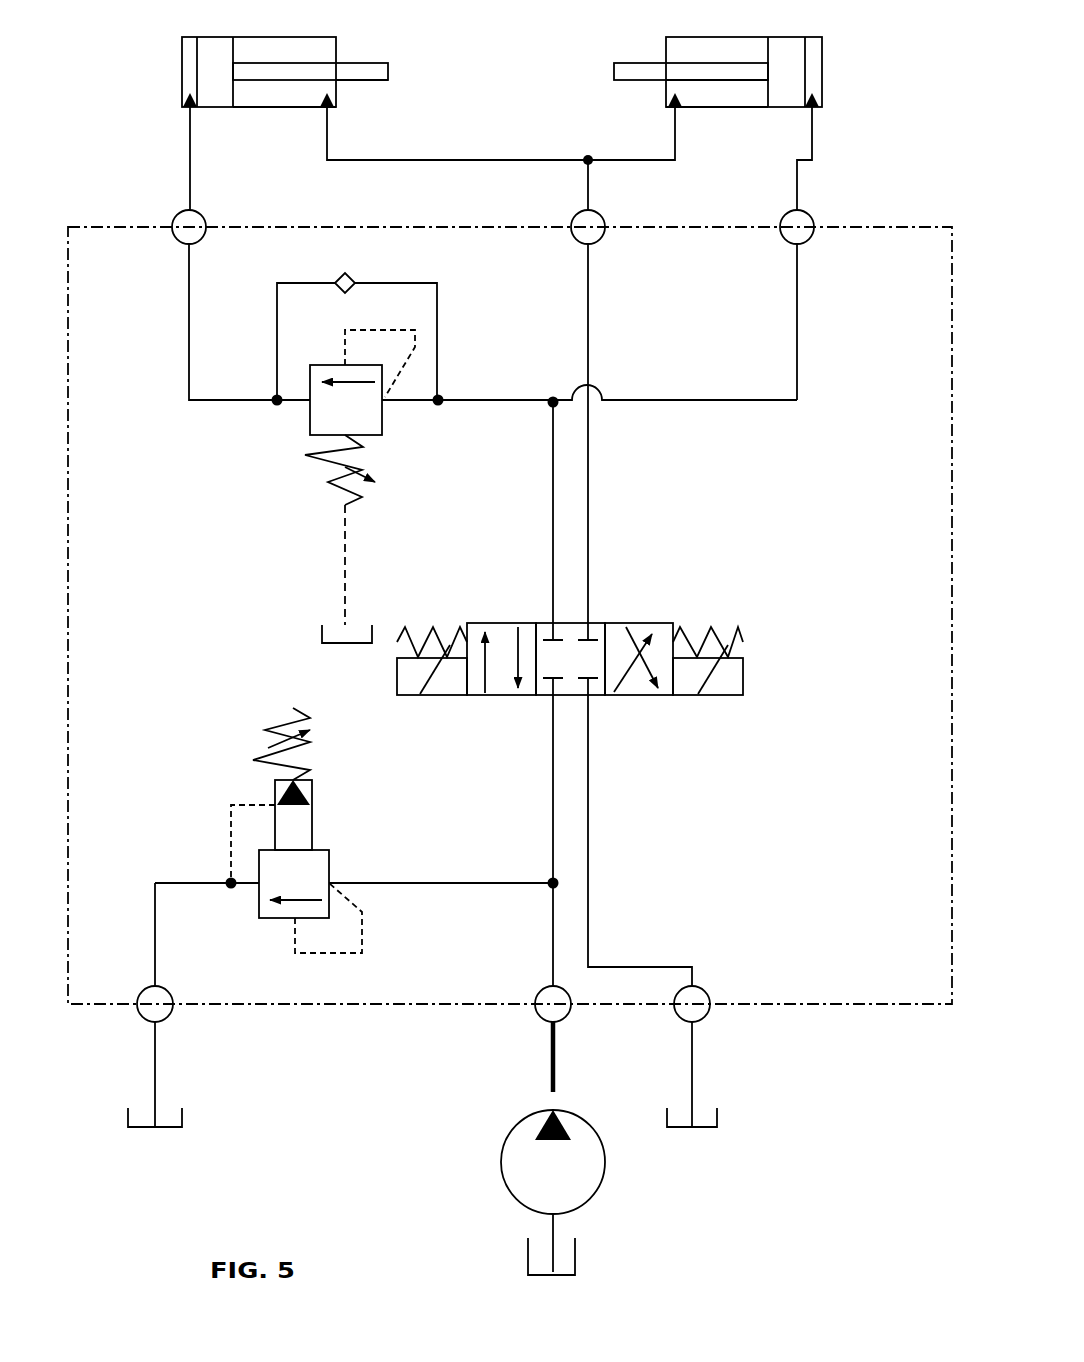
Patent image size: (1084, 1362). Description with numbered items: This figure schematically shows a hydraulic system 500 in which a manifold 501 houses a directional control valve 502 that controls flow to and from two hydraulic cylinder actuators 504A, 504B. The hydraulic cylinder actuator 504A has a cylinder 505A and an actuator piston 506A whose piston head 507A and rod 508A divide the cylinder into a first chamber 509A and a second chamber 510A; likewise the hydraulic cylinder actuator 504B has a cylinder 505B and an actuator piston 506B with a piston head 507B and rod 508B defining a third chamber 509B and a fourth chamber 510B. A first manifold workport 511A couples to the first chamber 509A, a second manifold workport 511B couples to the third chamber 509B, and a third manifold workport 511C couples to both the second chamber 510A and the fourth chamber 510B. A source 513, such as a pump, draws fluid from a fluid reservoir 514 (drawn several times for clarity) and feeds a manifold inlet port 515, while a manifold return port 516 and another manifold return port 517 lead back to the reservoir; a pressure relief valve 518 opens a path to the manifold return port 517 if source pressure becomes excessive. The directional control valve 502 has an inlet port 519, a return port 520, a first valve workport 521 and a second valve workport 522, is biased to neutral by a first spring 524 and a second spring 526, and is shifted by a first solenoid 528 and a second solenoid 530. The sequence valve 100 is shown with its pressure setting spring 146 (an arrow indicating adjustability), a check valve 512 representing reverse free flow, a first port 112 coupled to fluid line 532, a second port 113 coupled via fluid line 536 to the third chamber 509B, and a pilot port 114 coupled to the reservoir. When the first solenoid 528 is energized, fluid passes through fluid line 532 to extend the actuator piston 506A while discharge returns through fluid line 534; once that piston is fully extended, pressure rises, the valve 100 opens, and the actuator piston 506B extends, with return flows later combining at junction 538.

The valve 100 is at (340, 432).
The first port 112 is at (443, 396).
The second port 113 is at (272, 404).
The pilot port 114 is at (340, 514).
The pressure setting spring 146 is at (367, 440).
The hydraulic system 500 is at (150, 98).
The manifold 501 is at (126, 226).
The directional control valve 502 is at (588, 664).
The hydraulic cylinder actuator 504A is at (824, 50).
The hydraulic cylinder actuator 504B is at (262, 112).
The cylinder 505A is at (666, 43).
The cylinder 505B is at (336, 44).
The actuator piston 506A is at (755, 90).
The actuator piston 506B is at (370, 90).
The piston head 507A is at (787, 93).
The piston head 507B is at (220, 90).
The rod 508A is at (614, 72).
The rod 508B is at (388, 70).
The first chamber 509A is at (814, 70).
The third chamber 509B is at (190, 74).
The second chamber 510A is at (705, 98).
The fourth chamber 510B is at (285, 96).
The first manifold workport 511A is at (812, 212).
The second manifold workport 511B is at (180, 212).
The third manifold workport 511C is at (578, 212).
The check valve 512 is at (356, 268).
The source 513 is at (502, 1165).
The fluid reservoir 514 is at (320, 636).
The manifold inlet port 515 is at (540, 1014).
The manifold return port 516 is at (708, 1015).
The manifold return port 517 is at (138, 1013).
The pressure relief valve 518 is at (233, 788).
The inlet port 519 is at (548, 702).
The return port 520 is at (598, 702).
The first valve workport 521 is at (548, 620).
The second valve workport 522 is at (592, 620).
The first spring 524 is at (402, 632).
The second spring 526 is at (740, 628).
The first solenoid 528 is at (397, 668).
The second solenoid 530 is at (743, 676).
The fluid line 532 is at (797, 330).
The fluid line 534 is at (590, 490).
The fluid line 536 is at (188, 378).
The junction 538 is at (550, 408).